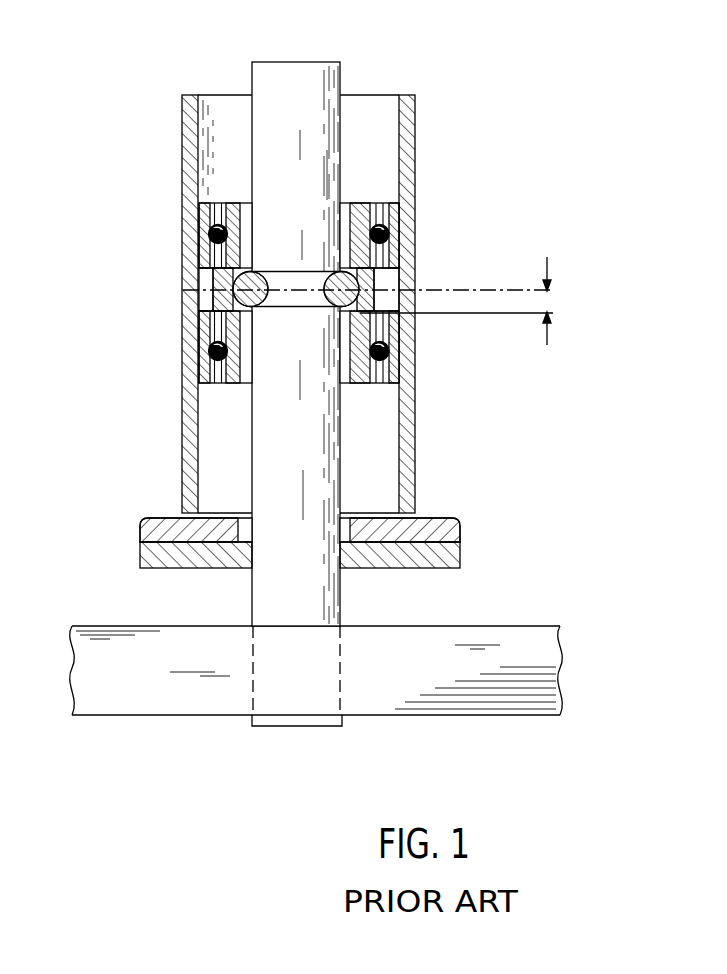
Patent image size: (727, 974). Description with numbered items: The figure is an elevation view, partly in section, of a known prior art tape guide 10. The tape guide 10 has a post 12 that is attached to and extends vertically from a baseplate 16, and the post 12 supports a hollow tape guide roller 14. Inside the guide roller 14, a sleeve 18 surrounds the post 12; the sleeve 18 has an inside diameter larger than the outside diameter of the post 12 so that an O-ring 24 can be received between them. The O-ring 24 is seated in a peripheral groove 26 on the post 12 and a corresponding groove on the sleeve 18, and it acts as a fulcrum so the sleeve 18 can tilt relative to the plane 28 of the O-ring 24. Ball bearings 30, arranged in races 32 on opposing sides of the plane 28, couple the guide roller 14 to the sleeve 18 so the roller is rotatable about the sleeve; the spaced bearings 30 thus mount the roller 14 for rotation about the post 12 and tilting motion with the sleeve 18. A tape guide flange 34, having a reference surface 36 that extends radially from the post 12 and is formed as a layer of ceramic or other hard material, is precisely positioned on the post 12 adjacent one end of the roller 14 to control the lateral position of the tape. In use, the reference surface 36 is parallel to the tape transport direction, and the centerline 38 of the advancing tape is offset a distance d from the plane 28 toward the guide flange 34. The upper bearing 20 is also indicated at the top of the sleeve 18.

The tape guide 10 is at (455, 112).
The post 12 is at (342, 107).
The tape guide roller 14 is at (415, 455).
The baseplate 16 is at (372, 625).
The sleeve 18 is at (197, 287).
The upper bearing 20 is at (345, 208).
The O-ring 24 is at (213, 291).
The peripheral groove 26 is at (312, 317).
The plane of the O-ring 28 is at (468, 290).
The ball bearings 30 is at (392, 229).
The races 32 is at (395, 257).
The tape guide flange 34 is at (455, 568).
The reference surface 36 is at (437, 520).
The centerline of the advancing tape 38 is at (517, 317).